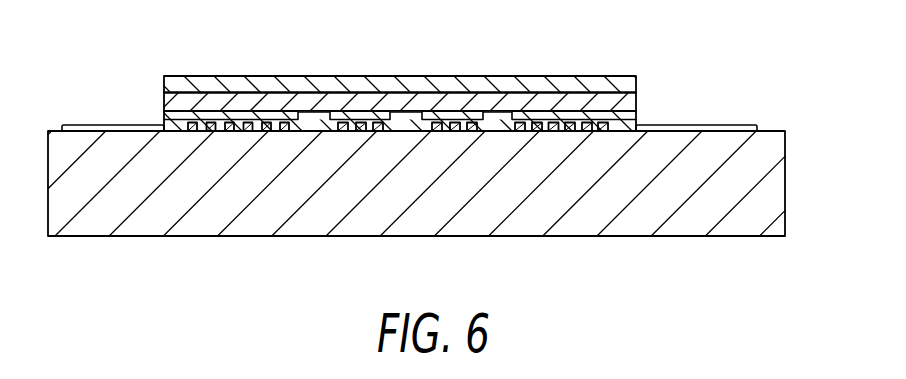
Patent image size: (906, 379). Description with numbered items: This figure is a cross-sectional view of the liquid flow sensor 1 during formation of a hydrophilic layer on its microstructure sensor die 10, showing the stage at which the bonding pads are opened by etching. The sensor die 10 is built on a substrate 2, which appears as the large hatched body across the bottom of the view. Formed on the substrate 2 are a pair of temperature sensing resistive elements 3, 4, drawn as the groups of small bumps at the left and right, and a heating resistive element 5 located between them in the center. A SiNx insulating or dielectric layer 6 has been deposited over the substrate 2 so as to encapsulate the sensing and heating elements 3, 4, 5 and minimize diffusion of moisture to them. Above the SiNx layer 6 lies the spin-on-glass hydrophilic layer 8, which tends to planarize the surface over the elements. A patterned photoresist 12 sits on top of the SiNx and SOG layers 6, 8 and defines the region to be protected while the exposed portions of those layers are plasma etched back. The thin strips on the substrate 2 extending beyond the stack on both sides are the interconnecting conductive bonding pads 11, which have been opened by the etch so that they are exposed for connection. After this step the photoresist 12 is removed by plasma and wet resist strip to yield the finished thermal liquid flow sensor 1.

The liquid flow sensor 1 is at (784, 68).
The substrate 2 is at (757, 208).
The temperature sensing resistive element 3 is at (248, 131).
The temperature sensing resistive element 4 is at (570, 131).
The heating resistive element 5 is at (455, 131).
The SiNx layer 6 is at (628, 117).
The hydrophilic layer 8 is at (164, 102).
The microstructure sensor die 10 is at (795, 131).
The conductive bonding pad 11 is at (91, 125).
The photoresist 12 is at (637, 82).